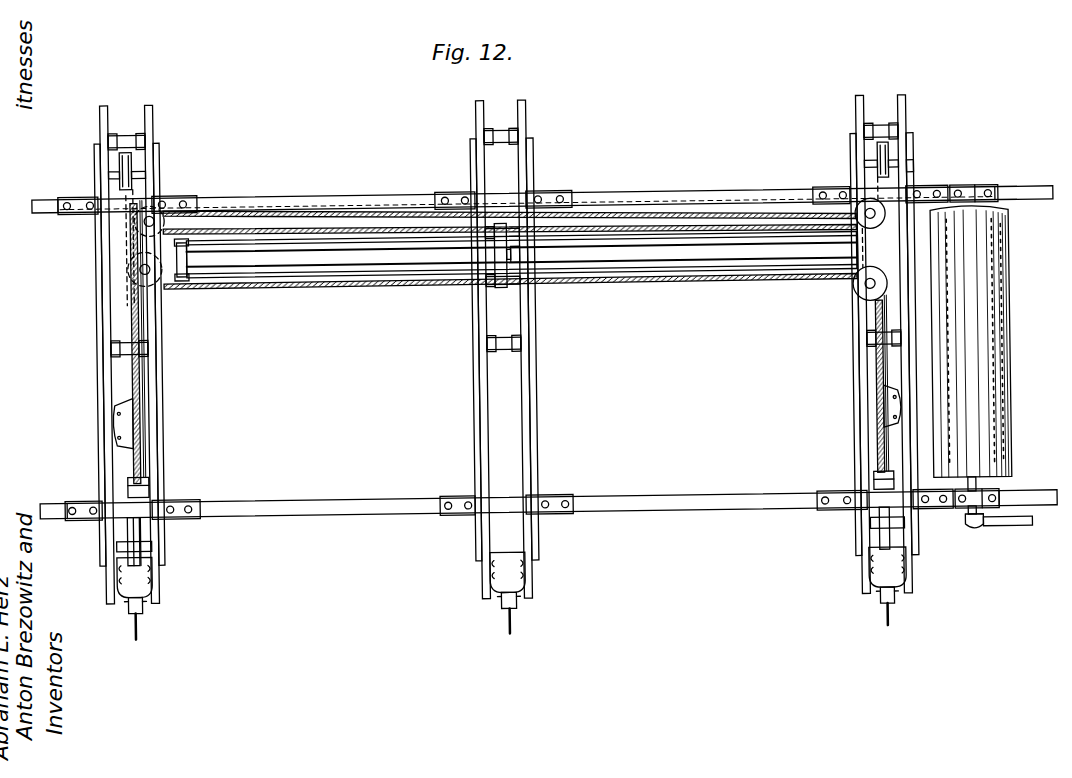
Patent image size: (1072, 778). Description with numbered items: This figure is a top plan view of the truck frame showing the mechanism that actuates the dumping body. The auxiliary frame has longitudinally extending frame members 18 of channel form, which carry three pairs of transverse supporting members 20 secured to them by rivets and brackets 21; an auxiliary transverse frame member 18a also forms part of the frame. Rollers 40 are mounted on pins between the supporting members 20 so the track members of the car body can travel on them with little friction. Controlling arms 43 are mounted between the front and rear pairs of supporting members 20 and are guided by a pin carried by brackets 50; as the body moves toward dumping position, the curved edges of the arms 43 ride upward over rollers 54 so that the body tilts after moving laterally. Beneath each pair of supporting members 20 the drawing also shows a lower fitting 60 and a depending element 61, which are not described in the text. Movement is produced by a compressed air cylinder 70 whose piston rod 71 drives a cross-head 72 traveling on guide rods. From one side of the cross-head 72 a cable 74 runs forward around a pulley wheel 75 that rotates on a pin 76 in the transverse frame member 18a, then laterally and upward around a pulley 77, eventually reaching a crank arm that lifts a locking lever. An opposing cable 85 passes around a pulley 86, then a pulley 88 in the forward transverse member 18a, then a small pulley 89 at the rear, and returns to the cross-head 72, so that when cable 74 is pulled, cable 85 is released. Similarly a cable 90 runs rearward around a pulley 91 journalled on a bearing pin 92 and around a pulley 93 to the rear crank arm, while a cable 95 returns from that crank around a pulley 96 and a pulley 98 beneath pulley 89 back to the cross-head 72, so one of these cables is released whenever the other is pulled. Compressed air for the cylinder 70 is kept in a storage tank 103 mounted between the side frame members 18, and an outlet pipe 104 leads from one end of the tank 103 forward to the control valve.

The longitudinally extending frame member 18 is at (628, 197).
The auxiliary transverse frame member 18a is at (148, 383).
The transverse supporting member 20 is at (108, 451).
The bracket 21 is at (457, 194).
The roller 40 is at (138, 125).
The controlling arm 43 is at (141, 432).
The bracket 50 is at (117, 400).
The roller 54 is at (149, 483).
The nozzle housing 60 is at (145, 600).
The needle 61 is at (137, 625).
The compressed air cylinder 70 is at (737, 267).
The piston rod 71 is at (513, 262).
The cross-head 72 is at (503, 283).
The cable 74 is at (667, 282).
The pulley wheel 75 is at (338, 234).
The pin 76 is at (862, 294).
The pulley 77 is at (880, 530).
The cable 85 is at (335, 227).
The pulley 86 is at (880, 156).
The pulley 88 is at (915, 172).
The small pulley 89 is at (126, 244).
The cable 90 is at (405, 281).
The pulley 91 is at (176, 281).
The bearing pin 92 is at (129, 274).
The pulley 93 is at (139, 160).
The cable 95 is at (130, 521).
The pulley 96 is at (150, 535).
The pulley 98 is at (170, 203).
The storage tank 103 is at (1003, 336).
The outlet pipe 104 is at (1015, 533).